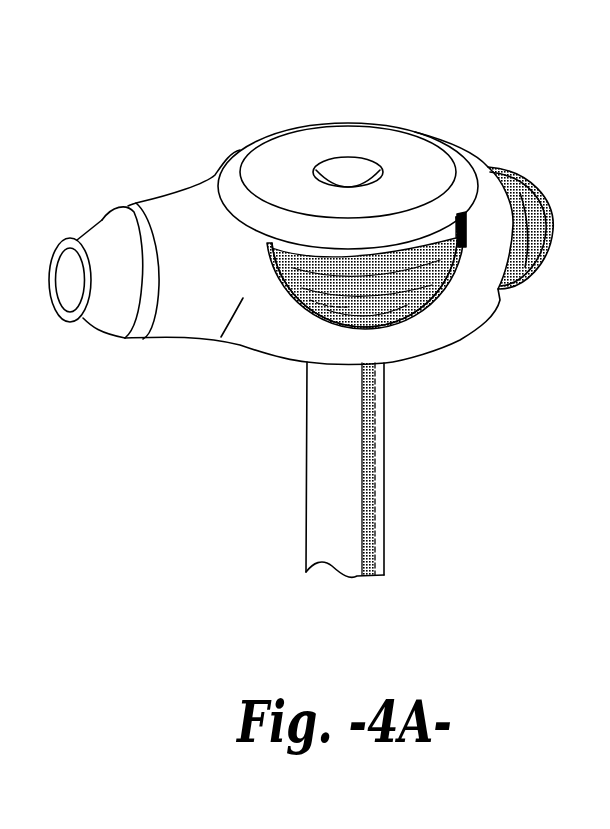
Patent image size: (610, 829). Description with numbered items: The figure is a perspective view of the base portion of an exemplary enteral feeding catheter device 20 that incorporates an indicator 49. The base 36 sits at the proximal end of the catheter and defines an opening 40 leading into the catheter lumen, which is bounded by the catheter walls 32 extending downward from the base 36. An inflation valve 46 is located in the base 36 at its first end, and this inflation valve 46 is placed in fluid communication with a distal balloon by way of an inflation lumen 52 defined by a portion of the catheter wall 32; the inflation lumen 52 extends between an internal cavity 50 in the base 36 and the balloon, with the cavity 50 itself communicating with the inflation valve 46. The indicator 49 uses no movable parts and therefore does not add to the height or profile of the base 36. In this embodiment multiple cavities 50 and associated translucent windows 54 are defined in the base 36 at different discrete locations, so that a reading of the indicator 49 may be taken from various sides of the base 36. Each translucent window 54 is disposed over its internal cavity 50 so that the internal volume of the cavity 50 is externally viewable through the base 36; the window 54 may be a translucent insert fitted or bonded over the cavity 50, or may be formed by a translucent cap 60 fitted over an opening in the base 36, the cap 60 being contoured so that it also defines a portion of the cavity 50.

The enteral feeding catheter device 20 is at (469, 83).
The catheter walls 32 is at (302, 505).
The base 36 is at (285, 333).
The opening 40 is at (348, 162).
The inflation valve 46 is at (156, 236).
The indicator 49 is at (540, 156).
The internal cavity 50 is at (283, 297).
The inflation lumen 52 is at (373, 487).
The translucent window 54 is at (440, 302).
The translucent cap 60 is at (541, 271).